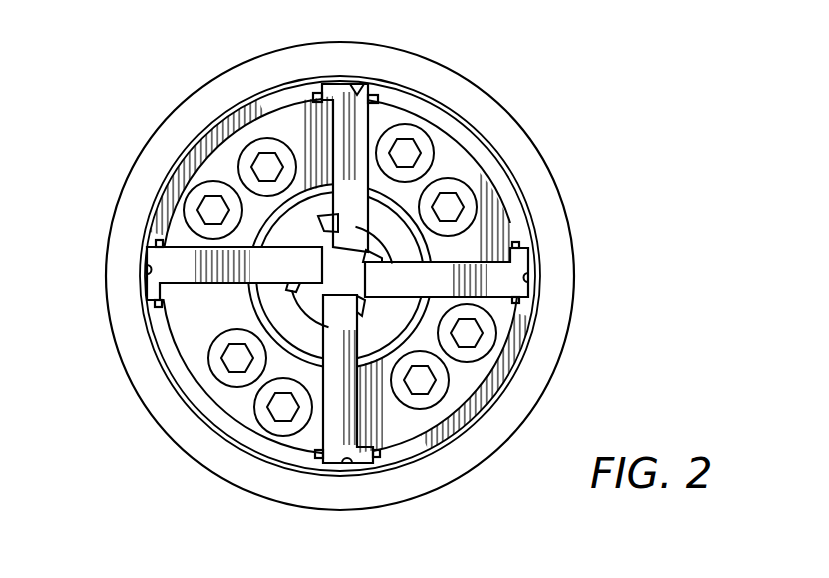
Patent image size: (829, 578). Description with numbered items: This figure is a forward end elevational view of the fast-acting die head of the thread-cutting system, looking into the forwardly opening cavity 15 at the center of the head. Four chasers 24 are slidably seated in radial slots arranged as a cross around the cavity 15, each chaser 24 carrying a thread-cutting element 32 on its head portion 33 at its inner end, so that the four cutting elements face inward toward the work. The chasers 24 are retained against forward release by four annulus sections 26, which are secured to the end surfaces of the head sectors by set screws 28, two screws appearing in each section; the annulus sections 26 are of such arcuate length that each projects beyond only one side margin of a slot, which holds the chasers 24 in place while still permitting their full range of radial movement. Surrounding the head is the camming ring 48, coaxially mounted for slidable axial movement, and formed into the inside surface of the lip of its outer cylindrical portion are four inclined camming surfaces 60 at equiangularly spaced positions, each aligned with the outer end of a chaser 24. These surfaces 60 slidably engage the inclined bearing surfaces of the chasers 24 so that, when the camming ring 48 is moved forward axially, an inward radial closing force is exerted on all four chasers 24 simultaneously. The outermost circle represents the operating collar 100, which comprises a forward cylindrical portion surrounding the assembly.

The operating collar 100 is at (534, 140).
The camming ring 48 is at (532, 204).
The chaser 24 is at (343, 128).
The annulus section 26 is at (200, 333).
The set screw 28 is at (212, 200).
The inclined camming surface 60 is at (366, 86).
The head portion 33 is at (321, 226).
The forwardly opening cavity 15 is at (366, 310).
The thread-cutting element 32 is at (334, 285).